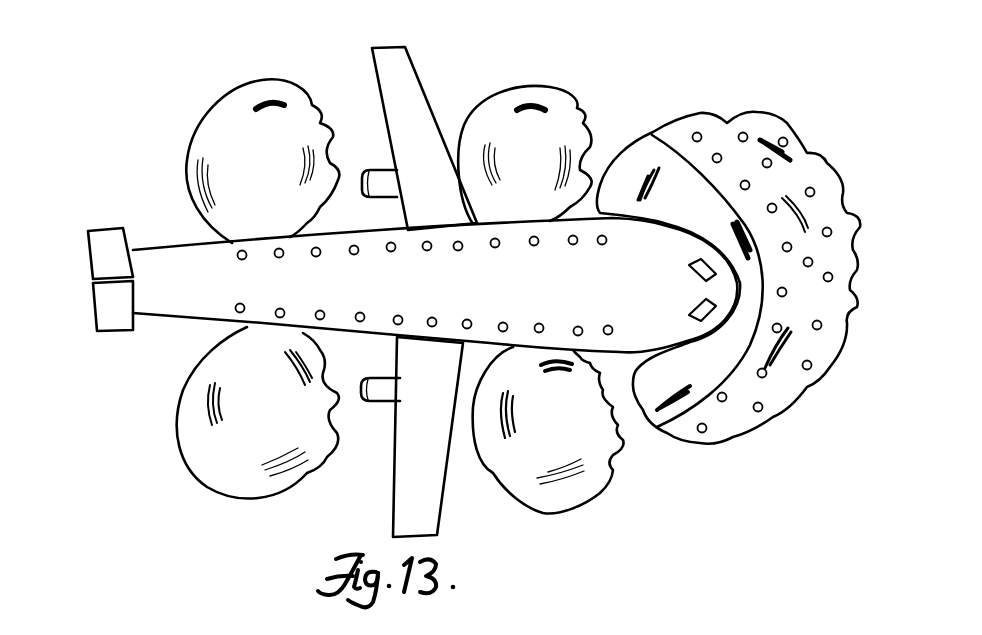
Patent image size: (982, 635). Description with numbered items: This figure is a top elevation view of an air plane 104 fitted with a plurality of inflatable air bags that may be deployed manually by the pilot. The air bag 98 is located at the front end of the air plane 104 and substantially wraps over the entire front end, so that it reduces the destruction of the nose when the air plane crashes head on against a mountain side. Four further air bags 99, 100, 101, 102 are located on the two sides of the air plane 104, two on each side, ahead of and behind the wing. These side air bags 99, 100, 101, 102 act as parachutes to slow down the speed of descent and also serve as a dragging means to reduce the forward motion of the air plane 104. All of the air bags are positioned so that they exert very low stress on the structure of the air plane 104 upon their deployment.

The inflatable air bag 98 is at (787, 132).
The inflatable air bag 99 is at (575, 127).
The inflatable air bag 100 is at (287, 97).
The inflatable air bag 101 is at (615, 453).
The inflatable air bag 102 is at (313, 467).
The air plane 104 is at (193, 313).